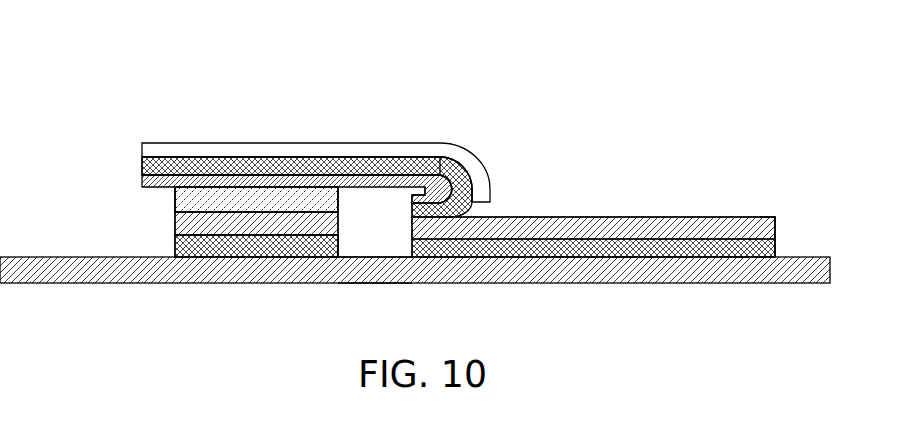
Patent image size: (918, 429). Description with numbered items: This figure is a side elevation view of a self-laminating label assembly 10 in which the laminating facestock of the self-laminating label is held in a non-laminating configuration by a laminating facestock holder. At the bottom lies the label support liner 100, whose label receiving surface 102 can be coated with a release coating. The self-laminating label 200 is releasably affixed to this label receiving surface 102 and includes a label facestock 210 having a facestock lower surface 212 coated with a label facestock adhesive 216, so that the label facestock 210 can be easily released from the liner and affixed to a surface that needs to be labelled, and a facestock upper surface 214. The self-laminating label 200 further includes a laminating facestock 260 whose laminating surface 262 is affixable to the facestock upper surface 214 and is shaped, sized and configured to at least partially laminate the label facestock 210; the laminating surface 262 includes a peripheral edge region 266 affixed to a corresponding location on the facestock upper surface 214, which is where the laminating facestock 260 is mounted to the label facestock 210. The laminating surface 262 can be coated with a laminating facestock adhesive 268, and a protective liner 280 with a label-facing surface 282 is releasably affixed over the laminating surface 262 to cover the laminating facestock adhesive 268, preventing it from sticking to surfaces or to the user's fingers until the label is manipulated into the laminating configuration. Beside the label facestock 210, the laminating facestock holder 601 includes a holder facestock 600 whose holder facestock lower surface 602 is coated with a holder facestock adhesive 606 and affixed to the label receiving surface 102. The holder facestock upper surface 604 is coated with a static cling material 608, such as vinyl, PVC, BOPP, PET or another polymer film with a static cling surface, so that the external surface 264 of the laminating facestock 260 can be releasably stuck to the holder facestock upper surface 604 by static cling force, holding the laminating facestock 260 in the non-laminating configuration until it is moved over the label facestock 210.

The electronic device 10 is at (482, 71).
The label support liner 100 is at (718, 267).
The label receiving surface 102 is at (397, 258).
The self-laminating label 200 is at (505, 137).
The protective liner 280 is at (415, 148).
The label-facing surface 282 is at (362, 167).
The laminating surface 262 is at (293, 175).
The laminating facestock 260 is at (190, 167).
The laminating facestock adhesive 268 is at (462, 188).
The peripheral edge region 266 is at (410, 202).
The laminating facestock holder 601 is at (144, 248).
The static cling material 608 is at (180, 202).
The external surface 264 is at (207, 190).
The holder facestock upper surface 604 is at (248, 210).
The holder facestock 600 is at (185, 226).
The holder facestock adhesive 606 is at (230, 247).
The holder facestock lower surface 602 is at (288, 240).
The label facestock 210 is at (762, 228).
The facestock upper surface 214 is at (683, 218).
The label facestock adhesive 216 is at (662, 250).
The facestock lower surface 212 is at (775, 248).